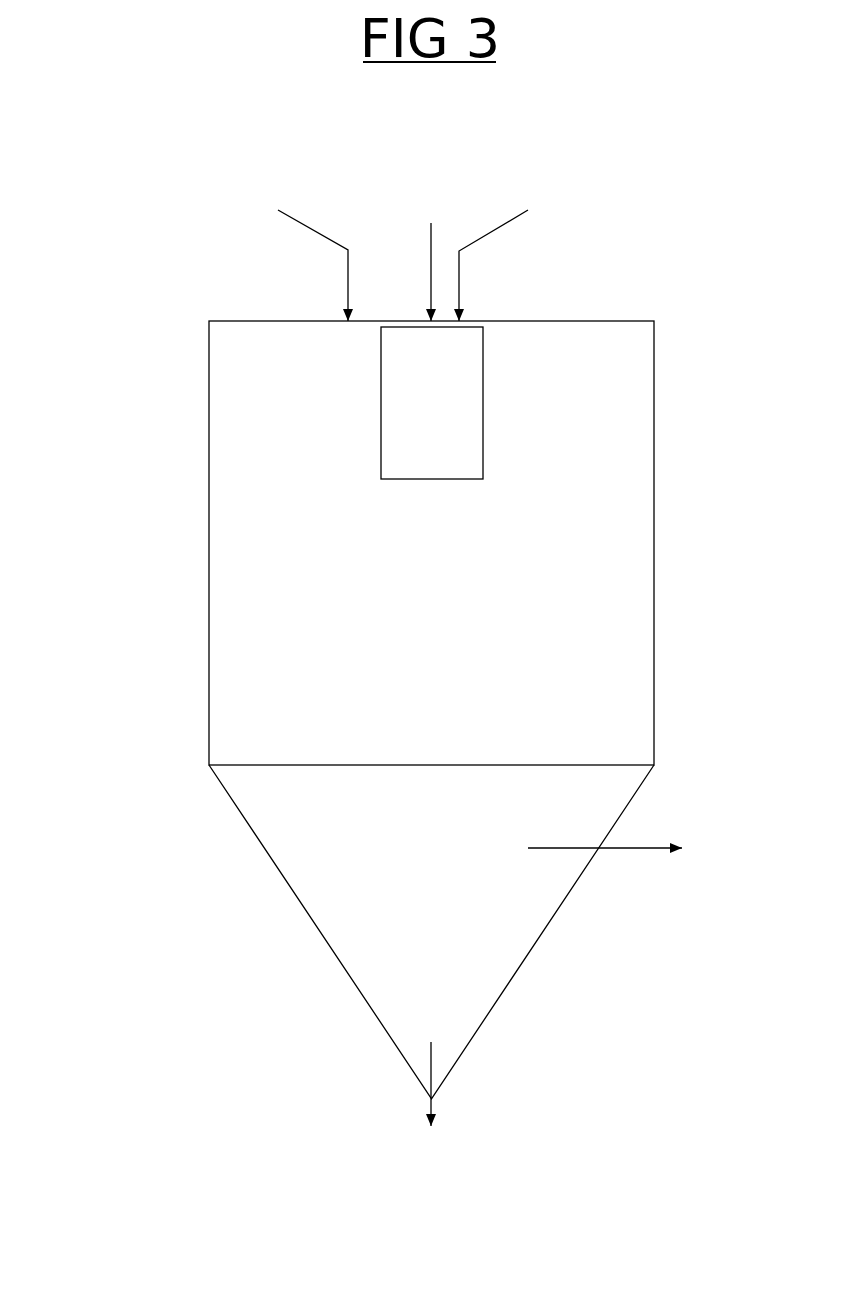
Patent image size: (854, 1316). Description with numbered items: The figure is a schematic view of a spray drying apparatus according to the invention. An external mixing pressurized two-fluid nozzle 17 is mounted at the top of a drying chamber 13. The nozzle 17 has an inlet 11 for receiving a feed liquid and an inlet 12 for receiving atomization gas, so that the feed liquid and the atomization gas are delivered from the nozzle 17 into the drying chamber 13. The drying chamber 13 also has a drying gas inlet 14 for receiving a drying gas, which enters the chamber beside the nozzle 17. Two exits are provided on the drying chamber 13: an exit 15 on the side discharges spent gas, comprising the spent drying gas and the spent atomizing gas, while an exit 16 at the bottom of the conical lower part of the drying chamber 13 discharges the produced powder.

The inlet for receiving a feed liquid 11 is at (431, 250).
The inlet for receiving atomization gas 12 is at (514, 250).
The drying chamber 13 is at (208, 626).
The drying gas inlet 14 is at (296, 251).
The exit for discharging spent gas 15 is at (633, 850).
The exit for discharging produced powder 16 is at (431, 1110).
The external mixing pressurized two-fluid nozzle 17 is at (432, 403).